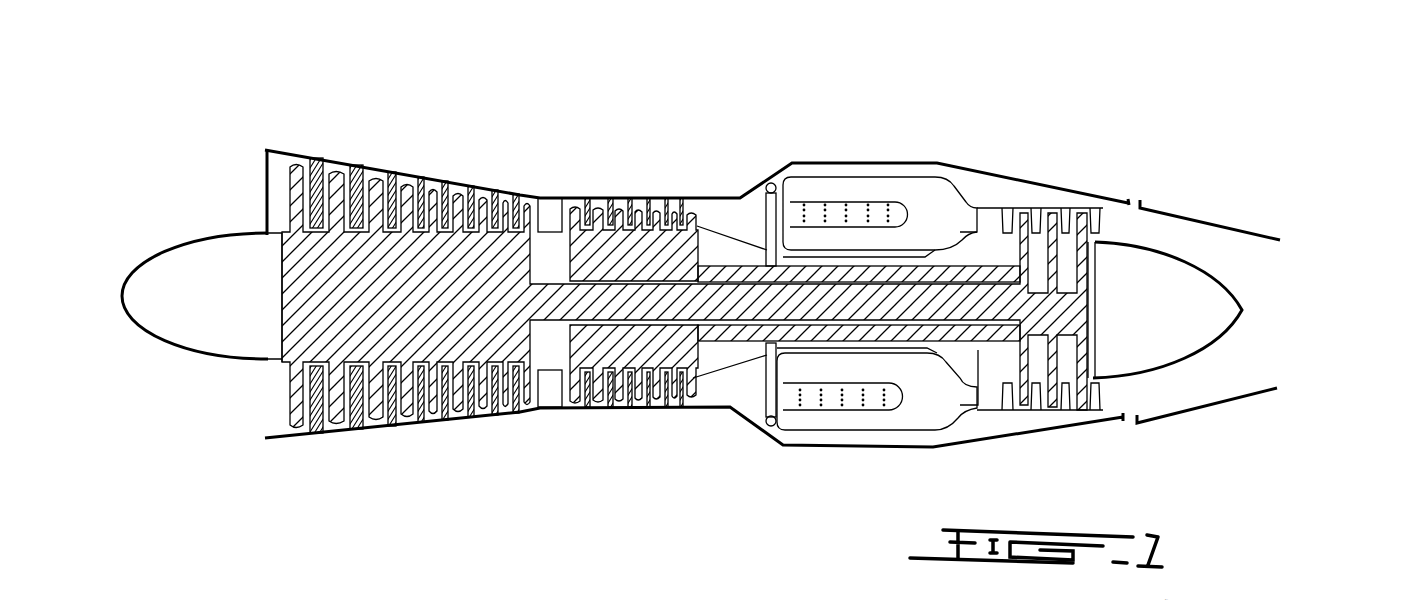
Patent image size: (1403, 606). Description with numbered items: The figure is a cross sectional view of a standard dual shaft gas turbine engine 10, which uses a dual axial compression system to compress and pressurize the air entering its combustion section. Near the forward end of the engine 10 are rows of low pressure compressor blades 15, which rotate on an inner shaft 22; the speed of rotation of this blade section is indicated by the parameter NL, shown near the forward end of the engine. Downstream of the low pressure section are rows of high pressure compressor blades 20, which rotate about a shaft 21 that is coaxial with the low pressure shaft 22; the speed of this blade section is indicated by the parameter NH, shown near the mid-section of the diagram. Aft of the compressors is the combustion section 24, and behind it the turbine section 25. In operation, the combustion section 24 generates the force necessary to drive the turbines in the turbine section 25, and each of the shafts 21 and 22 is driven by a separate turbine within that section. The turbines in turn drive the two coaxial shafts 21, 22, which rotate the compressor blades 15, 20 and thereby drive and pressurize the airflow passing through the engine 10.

The dual shaft engine 10 is at (263, 503).
The low pressure compressor blades 15 is at (363, 137).
The high pressure compressor blades 20 is at (576, 424).
The shaft 21 is at (976, 342).
The inner shaft 22 is at (983, 270).
The combustion section 24 is at (828, 462).
The turbine section 25 is at (1117, 297).
The low pressure compressor blade rotation speed NL is at (368, 430).
The high pressure compressor blade rotation speed NH is at (613, 430).